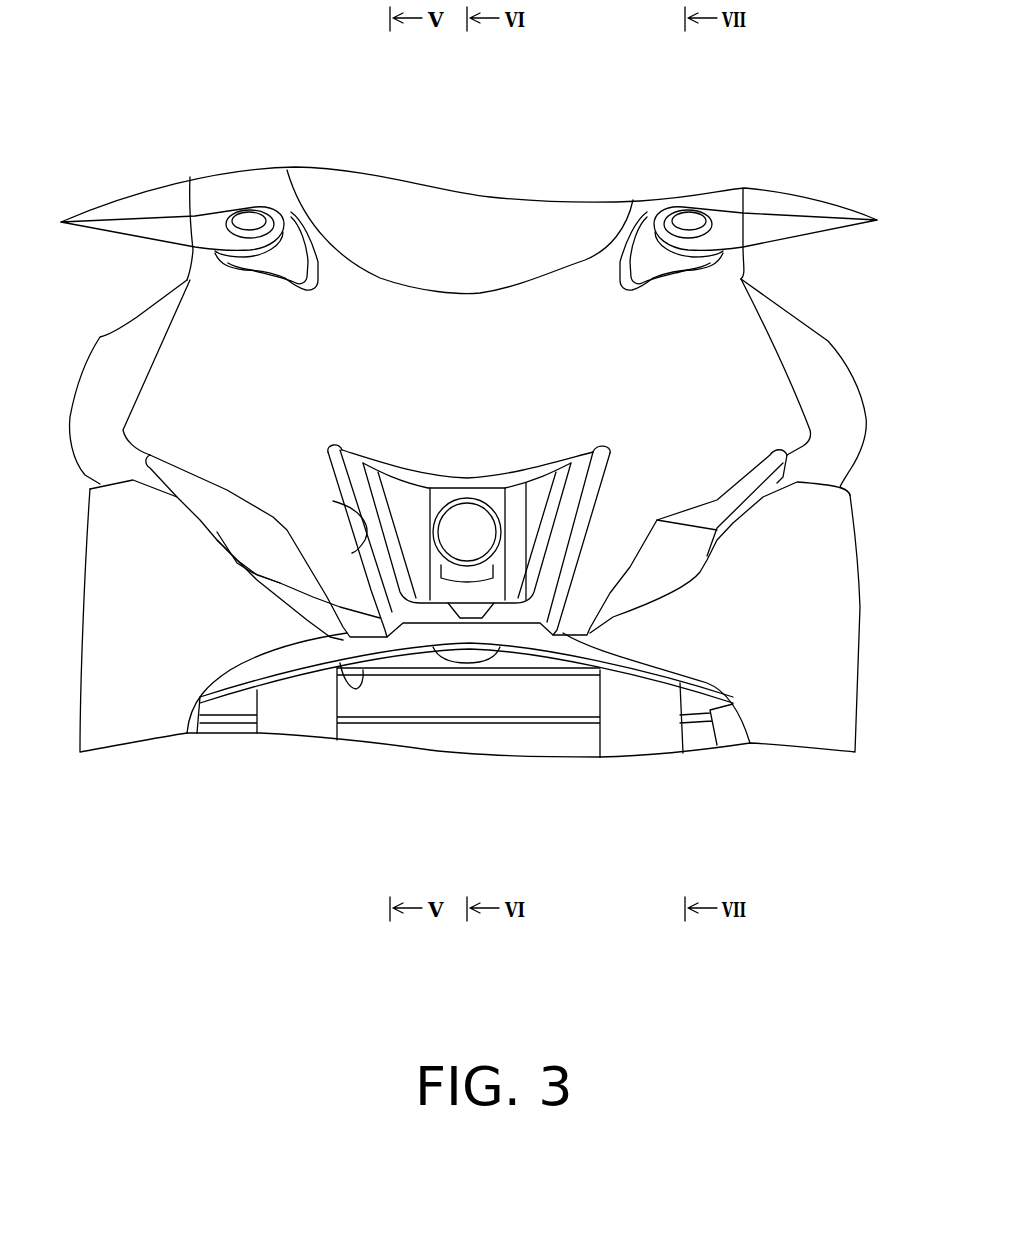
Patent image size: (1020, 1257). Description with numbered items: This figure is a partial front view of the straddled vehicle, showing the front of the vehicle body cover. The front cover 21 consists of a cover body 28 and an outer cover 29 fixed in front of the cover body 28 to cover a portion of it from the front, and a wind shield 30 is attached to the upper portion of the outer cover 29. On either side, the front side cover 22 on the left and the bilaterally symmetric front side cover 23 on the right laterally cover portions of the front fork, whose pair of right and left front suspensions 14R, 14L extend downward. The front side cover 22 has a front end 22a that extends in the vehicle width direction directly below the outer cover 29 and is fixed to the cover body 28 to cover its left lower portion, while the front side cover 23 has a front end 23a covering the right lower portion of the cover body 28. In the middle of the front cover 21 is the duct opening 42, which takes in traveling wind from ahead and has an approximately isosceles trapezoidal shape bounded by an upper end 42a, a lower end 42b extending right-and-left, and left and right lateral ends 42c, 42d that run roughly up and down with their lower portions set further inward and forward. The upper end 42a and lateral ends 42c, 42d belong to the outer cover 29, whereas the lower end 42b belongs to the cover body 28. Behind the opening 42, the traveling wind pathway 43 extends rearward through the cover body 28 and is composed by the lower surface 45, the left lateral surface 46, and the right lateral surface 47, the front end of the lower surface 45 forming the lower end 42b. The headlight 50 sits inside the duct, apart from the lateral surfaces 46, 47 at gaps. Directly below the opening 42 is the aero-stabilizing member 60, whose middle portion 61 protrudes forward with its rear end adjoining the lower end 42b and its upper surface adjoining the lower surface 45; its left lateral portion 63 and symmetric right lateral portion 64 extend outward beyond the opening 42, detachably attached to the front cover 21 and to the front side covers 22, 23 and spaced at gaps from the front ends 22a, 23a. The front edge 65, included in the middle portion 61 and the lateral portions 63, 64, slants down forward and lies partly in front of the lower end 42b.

The right front suspension 14R is at (290, 723).
The left front suspension 14L is at (640, 740).
The front cover 21 is at (133, 298).
The front side cover 22 is at (826, 736).
The front end 22a is at (684, 745).
The front side cover 23 is at (121, 731).
The front end 23a is at (302, 633).
The cover body 28 is at (119, 349).
The outer cover 29 is at (159, 400).
The wind shield 30 is at (388, 207).
The opening 42 is at (416, 637).
The upper end 42a is at (339, 470).
The lower end 42b is at (443, 625).
The left lateral end 42c is at (594, 495).
The right lateral end 42d is at (333, 501).
The traveling wind pathway 43 is at (529, 617).
The lower surface 45 is at (373, 600).
The left lateral surface 46 is at (560, 570).
The right lateral surface 47 is at (373, 567).
The headlight 50 is at (477, 517).
The aero-stabilizing member 60 is at (567, 675).
The middle portion 61 is at (477, 628).
The left lateral portion 63 is at (618, 660).
The right lateral portion 64 is at (310, 660).
The front edge 65 is at (393, 630).